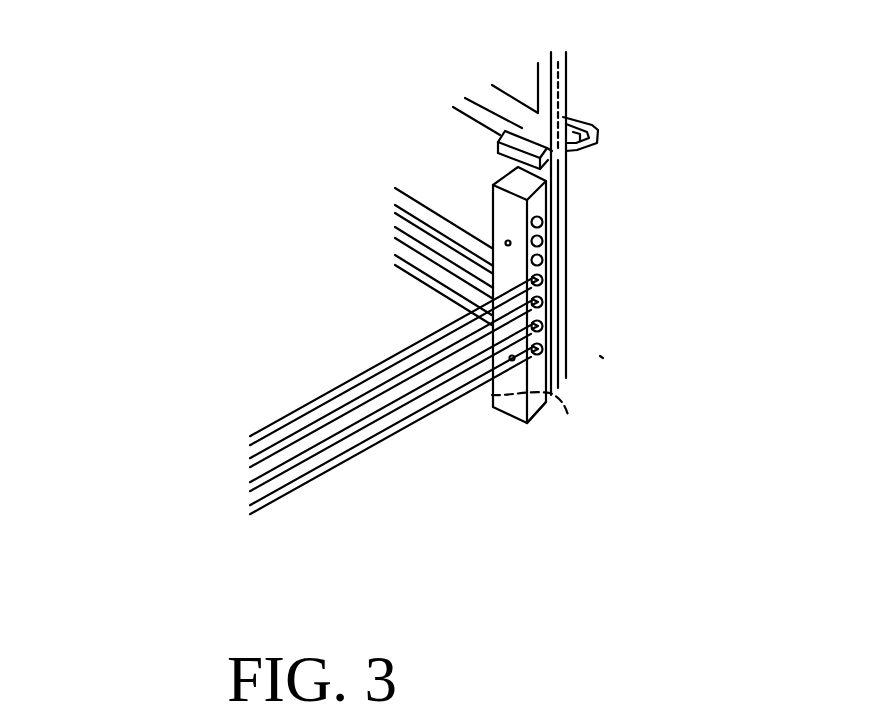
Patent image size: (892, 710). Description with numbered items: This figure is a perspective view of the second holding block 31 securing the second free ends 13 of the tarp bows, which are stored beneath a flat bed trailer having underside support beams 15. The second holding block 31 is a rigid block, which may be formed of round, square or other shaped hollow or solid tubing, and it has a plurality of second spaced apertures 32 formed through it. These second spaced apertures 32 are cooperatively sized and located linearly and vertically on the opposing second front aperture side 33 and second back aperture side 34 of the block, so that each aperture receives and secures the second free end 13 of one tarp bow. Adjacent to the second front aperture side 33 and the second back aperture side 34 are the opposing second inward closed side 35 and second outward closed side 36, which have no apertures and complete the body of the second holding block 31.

The second free end 13 is at (397, 190).
The underside support beam 15 is at (563, 62).
The second holding block 31 is at (605, 359).
The second spaced apertures 32 is at (543, 243).
The second front aperture side 33 is at (533, 410).
The second back aperture side 34 is at (483, 395).
The second inward closed side 35 is at (517, 410).
The second outward closed side 36 is at (542, 419).